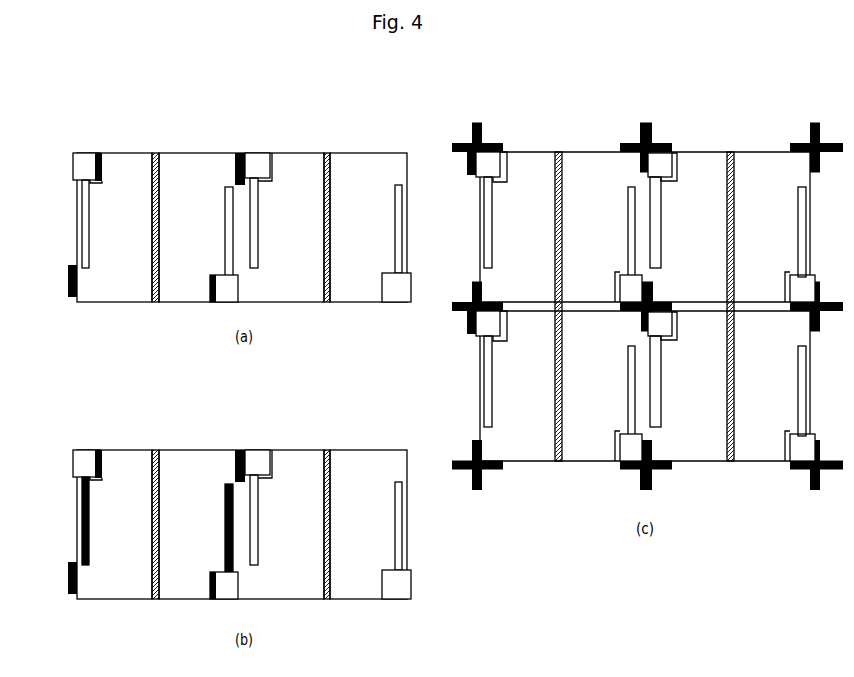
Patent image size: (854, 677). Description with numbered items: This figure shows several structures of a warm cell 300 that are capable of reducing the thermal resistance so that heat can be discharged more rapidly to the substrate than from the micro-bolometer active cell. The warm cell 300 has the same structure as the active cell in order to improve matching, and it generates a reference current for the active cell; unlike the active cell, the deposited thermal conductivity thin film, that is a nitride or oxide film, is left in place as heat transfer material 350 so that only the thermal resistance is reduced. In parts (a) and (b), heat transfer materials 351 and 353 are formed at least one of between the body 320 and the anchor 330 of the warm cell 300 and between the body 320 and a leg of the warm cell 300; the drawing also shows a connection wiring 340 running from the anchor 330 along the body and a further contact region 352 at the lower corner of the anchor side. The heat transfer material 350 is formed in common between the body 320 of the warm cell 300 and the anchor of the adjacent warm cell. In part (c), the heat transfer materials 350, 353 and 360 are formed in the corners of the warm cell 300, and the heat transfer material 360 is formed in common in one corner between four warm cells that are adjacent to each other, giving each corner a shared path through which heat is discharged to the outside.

The warm cell 300 is at (164, 133).
The body 320 is at (600, 160).
The anchor 330 is at (82, 170).
The connection wiring 340 is at (82, 209).
The heat transfer material 350 is at (240, 152).
The heat transfer material 351 is at (99, 152).
The second contact 352 is at (68, 283).
The heat transfer material 353 is at (213, 302).
The heat transfer material 360 is at (646, 120).